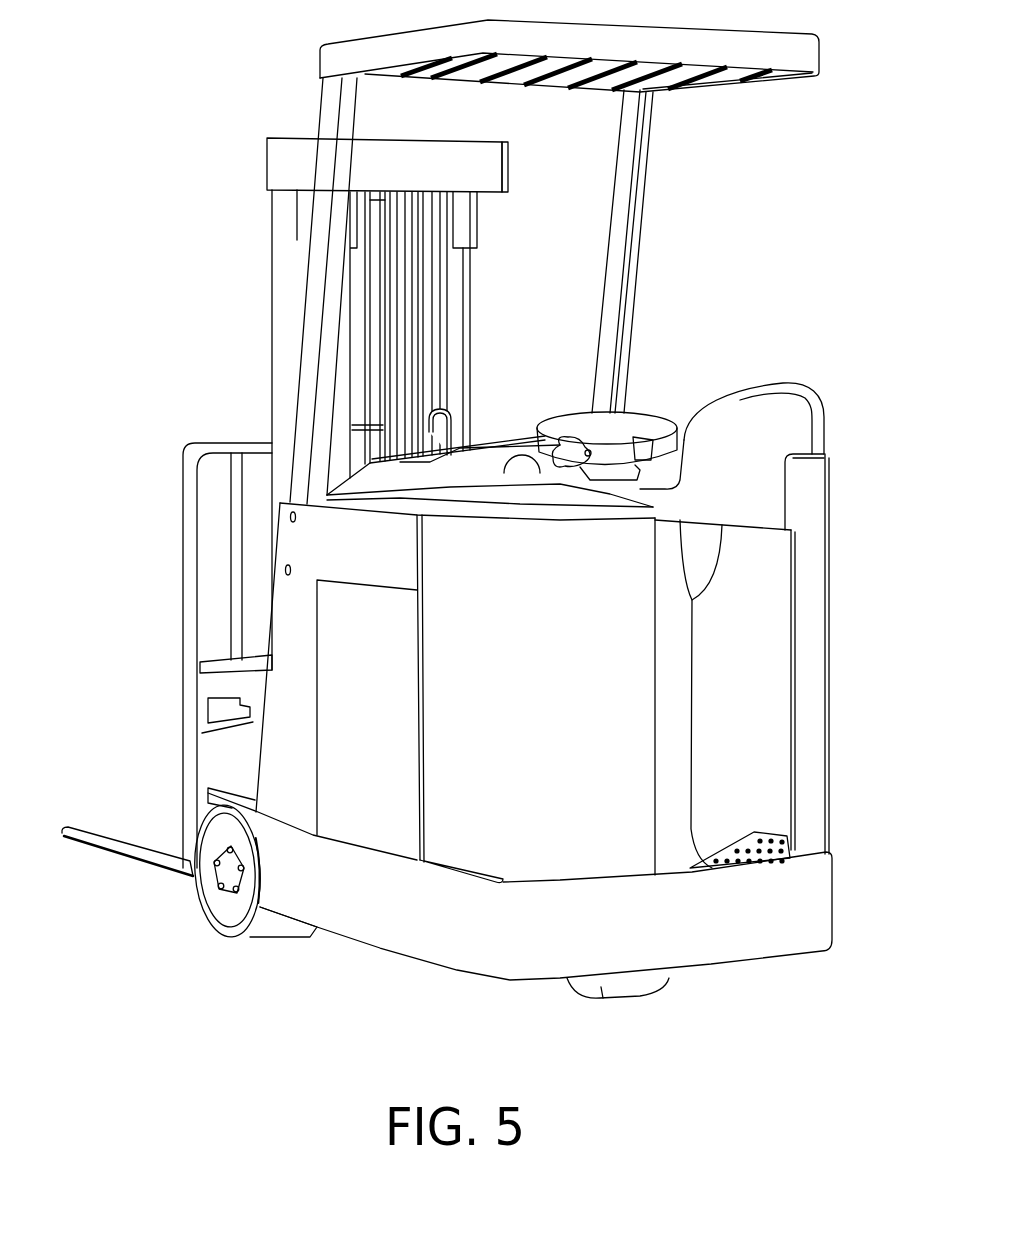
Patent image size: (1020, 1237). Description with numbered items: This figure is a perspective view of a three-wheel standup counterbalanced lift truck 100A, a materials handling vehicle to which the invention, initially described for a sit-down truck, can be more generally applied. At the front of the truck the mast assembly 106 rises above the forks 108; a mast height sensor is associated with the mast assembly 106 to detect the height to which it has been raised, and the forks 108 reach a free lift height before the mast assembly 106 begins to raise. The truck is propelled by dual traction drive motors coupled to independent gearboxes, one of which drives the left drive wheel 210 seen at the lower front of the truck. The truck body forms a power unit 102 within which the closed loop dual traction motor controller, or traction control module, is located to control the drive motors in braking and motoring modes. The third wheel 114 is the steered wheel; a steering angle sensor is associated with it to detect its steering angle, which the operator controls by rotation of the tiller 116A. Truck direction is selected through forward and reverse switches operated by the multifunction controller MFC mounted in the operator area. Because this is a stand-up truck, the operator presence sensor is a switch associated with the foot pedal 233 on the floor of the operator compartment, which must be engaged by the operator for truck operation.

The three-wheel standup lift truck 100A is at (481, 532).
The mast assembly 106 is at (216, 300).
The forks 108 is at (122, 845).
The left drive wheel 210 is at (265, 923).
The power unit 102 is at (487, 772).
The third wheel 114 is at (678, 932).
The foot pedal 233 is at (772, 875).
The multifunction controller MFC is at (566, 408).
The tiller 116A is at (657, 408).